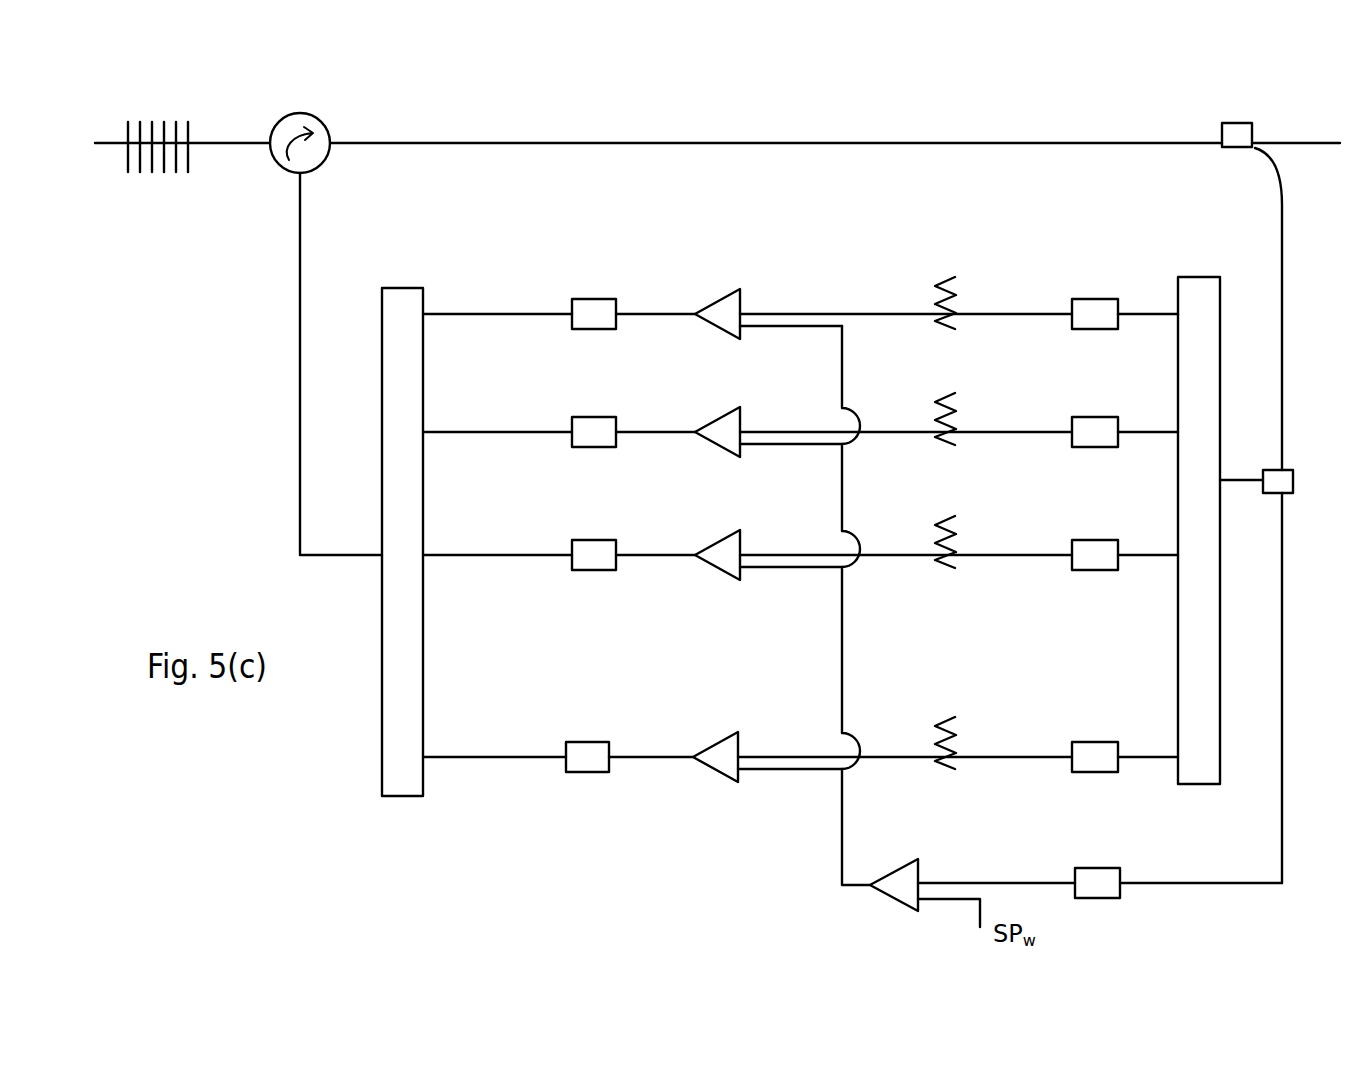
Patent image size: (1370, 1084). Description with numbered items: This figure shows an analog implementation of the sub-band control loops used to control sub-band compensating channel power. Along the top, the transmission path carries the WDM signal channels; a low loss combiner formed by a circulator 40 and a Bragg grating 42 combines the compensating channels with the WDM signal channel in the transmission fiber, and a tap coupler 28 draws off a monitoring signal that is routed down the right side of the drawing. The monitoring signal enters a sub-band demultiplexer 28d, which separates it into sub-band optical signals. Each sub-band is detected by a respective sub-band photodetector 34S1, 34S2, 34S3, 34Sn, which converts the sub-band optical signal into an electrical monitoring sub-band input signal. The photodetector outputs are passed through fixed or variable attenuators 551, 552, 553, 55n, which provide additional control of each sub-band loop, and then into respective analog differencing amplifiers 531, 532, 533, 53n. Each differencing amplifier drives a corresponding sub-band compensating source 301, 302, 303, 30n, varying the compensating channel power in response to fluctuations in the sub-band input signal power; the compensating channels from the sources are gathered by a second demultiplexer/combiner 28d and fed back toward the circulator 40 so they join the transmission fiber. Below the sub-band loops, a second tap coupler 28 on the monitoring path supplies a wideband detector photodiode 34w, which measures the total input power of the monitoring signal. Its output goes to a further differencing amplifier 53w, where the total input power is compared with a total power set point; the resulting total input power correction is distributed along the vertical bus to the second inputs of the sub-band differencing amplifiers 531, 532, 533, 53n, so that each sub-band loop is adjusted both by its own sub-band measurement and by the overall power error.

The Bragg grating 42 is at (168, 121).
The circulator 40 is at (310, 114).
The tap coupler 28 is at (1230, 123).
The sub-band demultiplexer 28d is at (408, 288).
The sub-band compensating source 301 is at (608, 299).
The sub-band compensating source 302 is at (612, 417).
The sub-band compensating source 303 is at (612, 540).
The sub-band compensating source 30n is at (605, 742).
The analog differencing amplifier 531 is at (712, 303).
The analog differencing amplifier 532 is at (720, 415).
The analog differencing amplifier 533 is at (725, 540).
The analog differencing amplifier 53n is at (718, 742).
The differencing amplifier 53w is at (902, 870).
The attenuator 551 is at (954, 278).
The attenuator 552 is at (954, 393).
The attenuator 553 is at (954, 516).
The attenuator 55n is at (954, 717).
The sub-band photodetector 34S1 is at (1083, 299).
The sub-band photodetector 34S2 is at (1083, 417).
The sub-band photodetector 34S3 is at (1083, 540).
The sub-band photodetector 34Sn is at (1085, 742).
The wideband detector photodiode 34w is at (1076, 868).